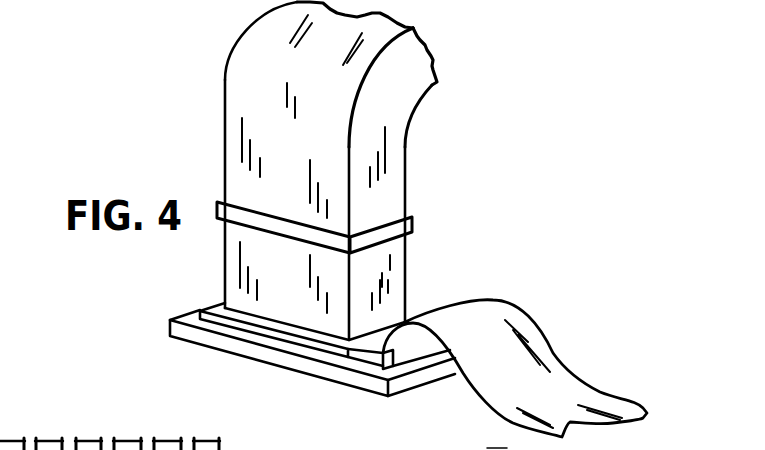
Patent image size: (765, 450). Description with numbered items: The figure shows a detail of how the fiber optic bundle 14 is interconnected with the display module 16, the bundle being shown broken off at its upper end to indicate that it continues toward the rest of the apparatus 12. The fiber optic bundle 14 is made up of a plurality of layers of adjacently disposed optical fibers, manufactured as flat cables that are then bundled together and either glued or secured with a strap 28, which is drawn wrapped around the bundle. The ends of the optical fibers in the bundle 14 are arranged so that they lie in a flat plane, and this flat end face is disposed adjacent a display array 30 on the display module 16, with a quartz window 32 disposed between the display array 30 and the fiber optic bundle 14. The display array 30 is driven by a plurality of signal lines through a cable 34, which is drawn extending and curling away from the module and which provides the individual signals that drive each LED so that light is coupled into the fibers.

The apparatus 12 is at (704, 12).
The fiber optic bundle 14 is at (238, 90).
The display module 16 is at (142, 343).
The strap 28 is at (400, 231).
The display array 30 is at (268, 353).
The quartz window 32 is at (217, 308).
The cable 34 is at (560, 383).